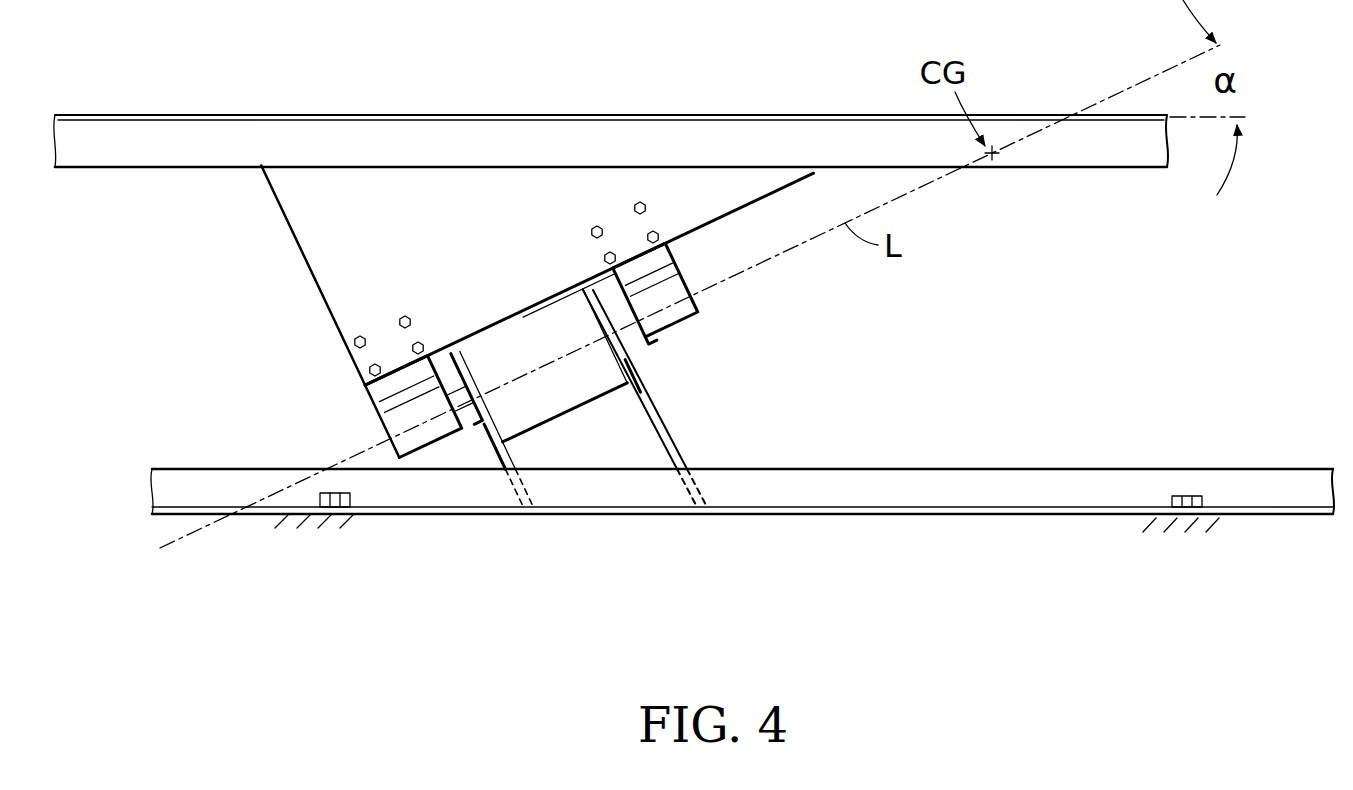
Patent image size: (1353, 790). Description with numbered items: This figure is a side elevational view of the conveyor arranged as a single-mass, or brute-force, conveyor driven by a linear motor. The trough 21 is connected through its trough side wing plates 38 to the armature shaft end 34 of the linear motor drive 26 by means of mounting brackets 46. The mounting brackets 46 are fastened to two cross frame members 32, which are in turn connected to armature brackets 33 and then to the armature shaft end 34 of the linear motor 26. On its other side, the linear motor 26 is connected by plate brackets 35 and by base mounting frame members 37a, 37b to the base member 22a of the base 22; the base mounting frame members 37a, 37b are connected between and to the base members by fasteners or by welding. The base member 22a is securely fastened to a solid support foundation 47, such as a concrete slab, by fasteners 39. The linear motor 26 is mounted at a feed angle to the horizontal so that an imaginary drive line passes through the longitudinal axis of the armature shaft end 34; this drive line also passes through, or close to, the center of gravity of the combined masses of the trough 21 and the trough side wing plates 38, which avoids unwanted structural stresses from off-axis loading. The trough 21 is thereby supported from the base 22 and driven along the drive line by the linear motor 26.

The trough 21 is at (123, 115).
The base 22 is at (988, 464).
The base member 22a is at (808, 516).
The linear motor drive 26 is at (574, 421).
The cross frame member 32 is at (700, 312).
The armature bracket 33 is at (645, 344).
The armature shaft end 34 is at (455, 386).
The plate bracket 35 is at (523, 317).
The base mounting frame member 37a is at (666, 428).
The base mounting frame member 37b is at (512, 462).
The trough side wing plate 38 is at (411, 254).
The fastener 39 is at (350, 500).
The mounting bracket 46 is at (672, 257).
The support foundation 47 is at (296, 534).